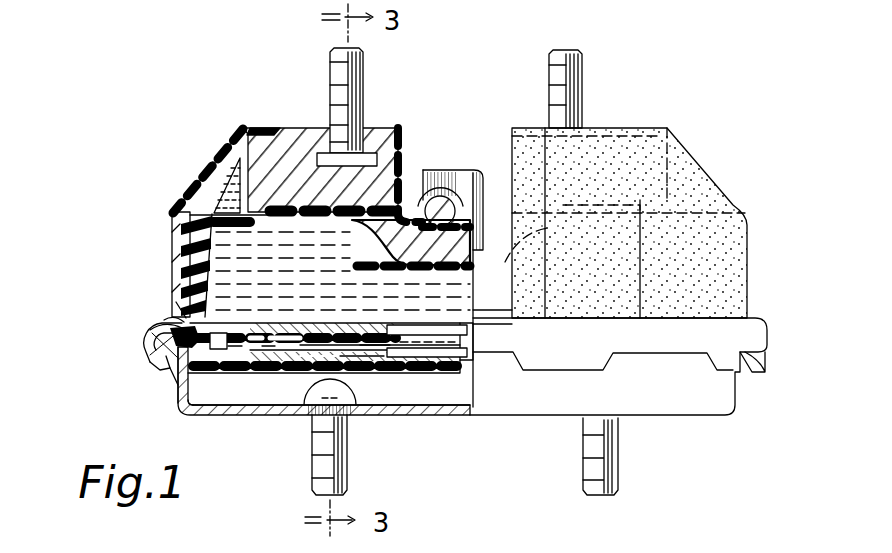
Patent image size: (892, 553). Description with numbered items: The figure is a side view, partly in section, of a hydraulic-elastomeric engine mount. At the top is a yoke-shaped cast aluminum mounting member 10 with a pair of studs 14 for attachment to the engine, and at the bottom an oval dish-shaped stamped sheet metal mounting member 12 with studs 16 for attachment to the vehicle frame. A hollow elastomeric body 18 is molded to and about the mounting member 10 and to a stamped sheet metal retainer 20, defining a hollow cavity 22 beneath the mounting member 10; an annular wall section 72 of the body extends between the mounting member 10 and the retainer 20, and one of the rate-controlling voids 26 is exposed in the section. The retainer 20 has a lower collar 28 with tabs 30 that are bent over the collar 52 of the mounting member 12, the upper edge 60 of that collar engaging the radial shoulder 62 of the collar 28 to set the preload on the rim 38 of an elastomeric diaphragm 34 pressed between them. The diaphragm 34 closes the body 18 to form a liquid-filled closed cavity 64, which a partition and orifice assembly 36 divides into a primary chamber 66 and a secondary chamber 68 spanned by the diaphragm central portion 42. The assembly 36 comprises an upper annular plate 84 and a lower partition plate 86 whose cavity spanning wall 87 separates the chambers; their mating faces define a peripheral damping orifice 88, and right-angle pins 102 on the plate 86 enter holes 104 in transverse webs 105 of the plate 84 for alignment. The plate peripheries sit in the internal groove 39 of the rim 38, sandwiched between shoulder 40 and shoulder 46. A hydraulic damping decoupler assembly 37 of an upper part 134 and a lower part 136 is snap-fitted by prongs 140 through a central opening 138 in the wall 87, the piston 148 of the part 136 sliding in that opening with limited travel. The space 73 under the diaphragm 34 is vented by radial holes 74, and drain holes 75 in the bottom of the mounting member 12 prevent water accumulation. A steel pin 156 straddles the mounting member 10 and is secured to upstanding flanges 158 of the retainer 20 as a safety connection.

The yoke-shaped cast aluminum mounting member 10 is at (375, 142).
The oval dish-shaped stamped sheet metal mounting member 12 is at (658, 402).
The studs 14 is at (330, 70).
The studs 16 is at (314, 460).
The hollow elastomeric body 18 is at (237, 143).
The stamped sheet metal retainer 20 is at (178, 246).
The hollow cavity 22 is at (196, 264).
The voids 26 is at (230, 164).
The collar 28 is at (148, 331).
The tabs 30 is at (157, 365).
The elastomeric diaphragm 34 is at (198, 416).
The partition and orifice assembly 36 is at (369, 384).
The hydraulic damping decoupler assembly 37 is at (468, 356).
The annular rim section 38 is at (147, 323).
The internal groove 39 is at (258, 324).
The shoulder 40 is at (228, 324).
The central portion 42 is at (375, 378).
The shoulder 46 is at (177, 377).
The collar 52 is at (153, 348).
The upper edge 60 is at (160, 317).
The radial shoulder 62 is at (174, 308).
The closed cavity 64 is at (172, 218).
The primary chamber 66 is at (188, 274).
The secondary chamber 68 is at (282, 397).
The annular wall section 72 is at (217, 178).
The space 73 is at (310, 418).
The radial holes 74 is at (180, 397).
The drain holes 75 is at (233, 414).
The upper annular plate 84 is at (292, 338).
The lower partition plate 86 is at (308, 340).
The cavity spanning wall 87 is at (303, 342).
The damping orifice 88 is at (224, 350).
The right-angle pins 102 is at (282, 324).
The holes 104 is at (300, 324).
The transverse webs 105 is at (270, 324).
The upper decoupler part 134 is at (462, 322).
The lower decoupler part 136 is at (409, 360).
The central opening 138 is at (398, 334).
The prongs 140 is at (464, 312).
The piston 148 is at (474, 332).
The steel pin 156 is at (440, 196).
The upstanding flanges 158 is at (471, 178).